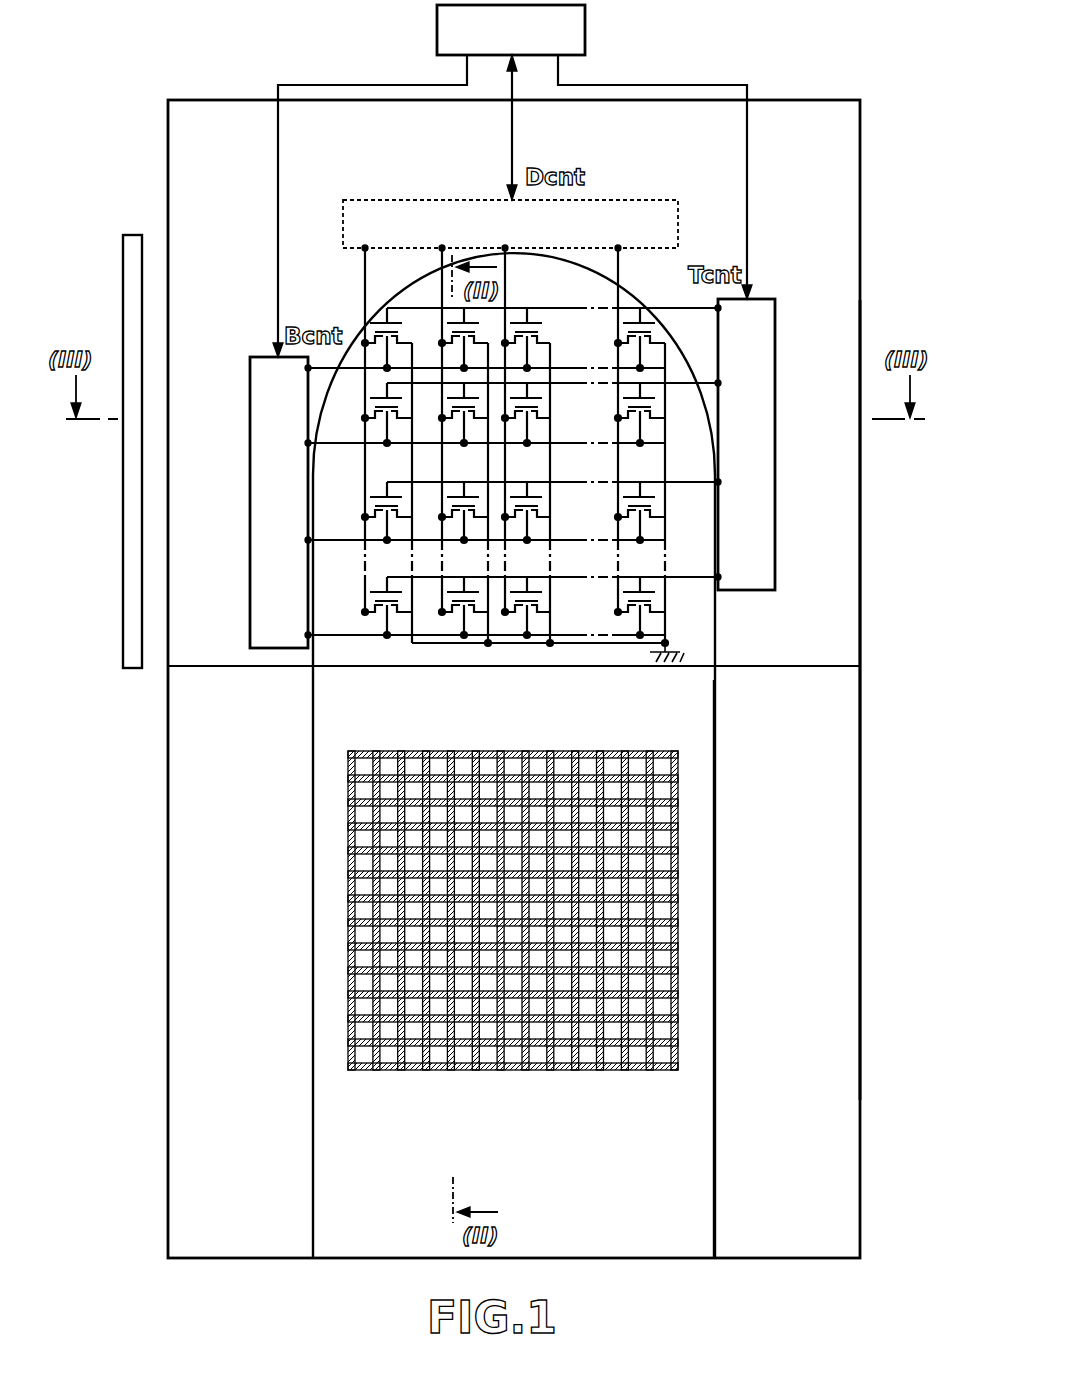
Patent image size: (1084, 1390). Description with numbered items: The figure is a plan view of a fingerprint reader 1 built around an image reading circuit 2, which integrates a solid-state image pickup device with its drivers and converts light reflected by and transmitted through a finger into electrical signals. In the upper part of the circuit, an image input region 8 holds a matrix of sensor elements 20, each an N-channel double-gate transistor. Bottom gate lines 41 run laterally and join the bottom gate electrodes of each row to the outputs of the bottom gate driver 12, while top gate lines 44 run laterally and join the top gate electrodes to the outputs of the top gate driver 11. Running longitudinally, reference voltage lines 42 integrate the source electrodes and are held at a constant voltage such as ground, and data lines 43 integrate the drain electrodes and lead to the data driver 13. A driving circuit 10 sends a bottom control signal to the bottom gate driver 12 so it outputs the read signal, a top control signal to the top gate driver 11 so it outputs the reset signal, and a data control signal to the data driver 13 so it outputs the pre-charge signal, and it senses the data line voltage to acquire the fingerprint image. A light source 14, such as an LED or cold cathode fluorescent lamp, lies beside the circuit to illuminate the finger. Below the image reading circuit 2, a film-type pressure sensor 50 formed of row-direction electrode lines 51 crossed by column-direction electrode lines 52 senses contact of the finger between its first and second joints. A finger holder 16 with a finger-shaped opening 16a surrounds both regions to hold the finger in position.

The fingerprint reader 1 is at (895, 112).
The image reading circuit 2 is at (868, 560).
The image input region 8 is at (690, 618).
The driving circuit 10 is at (587, 30).
The top gate driver 11 is at (763, 299).
The bottom gate driver 12 is at (253, 357).
The data driver 13 is at (637, 200).
The light source 14 is at (120, 303).
The finger holder 16 is at (763, 1192).
The opening 16a is at (710, 1200).
The sensor elements 20 is at (443, 332).
The bottom gate lines 41 is at (364, 298).
The reference voltage lines 42 is at (410, 470).
The data lines 43 is at (380, 512).
The top gate lines 44 is at (537, 306).
The pressure sensor 50 is at (868, 805).
The electrode lines 51 is at (680, 786).
The electrode lines 52 is at (383, 1072).